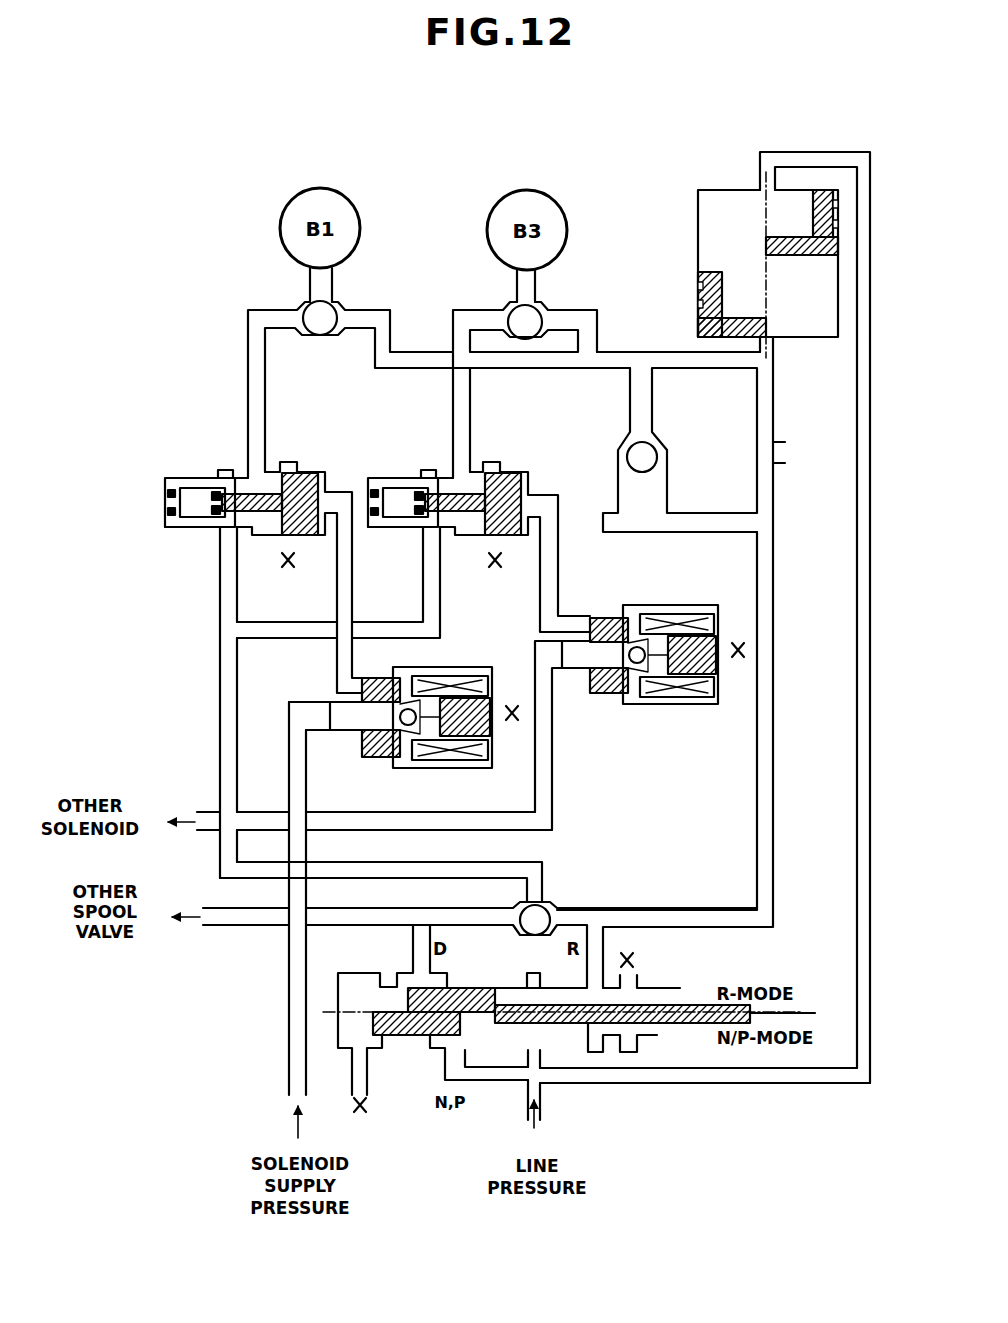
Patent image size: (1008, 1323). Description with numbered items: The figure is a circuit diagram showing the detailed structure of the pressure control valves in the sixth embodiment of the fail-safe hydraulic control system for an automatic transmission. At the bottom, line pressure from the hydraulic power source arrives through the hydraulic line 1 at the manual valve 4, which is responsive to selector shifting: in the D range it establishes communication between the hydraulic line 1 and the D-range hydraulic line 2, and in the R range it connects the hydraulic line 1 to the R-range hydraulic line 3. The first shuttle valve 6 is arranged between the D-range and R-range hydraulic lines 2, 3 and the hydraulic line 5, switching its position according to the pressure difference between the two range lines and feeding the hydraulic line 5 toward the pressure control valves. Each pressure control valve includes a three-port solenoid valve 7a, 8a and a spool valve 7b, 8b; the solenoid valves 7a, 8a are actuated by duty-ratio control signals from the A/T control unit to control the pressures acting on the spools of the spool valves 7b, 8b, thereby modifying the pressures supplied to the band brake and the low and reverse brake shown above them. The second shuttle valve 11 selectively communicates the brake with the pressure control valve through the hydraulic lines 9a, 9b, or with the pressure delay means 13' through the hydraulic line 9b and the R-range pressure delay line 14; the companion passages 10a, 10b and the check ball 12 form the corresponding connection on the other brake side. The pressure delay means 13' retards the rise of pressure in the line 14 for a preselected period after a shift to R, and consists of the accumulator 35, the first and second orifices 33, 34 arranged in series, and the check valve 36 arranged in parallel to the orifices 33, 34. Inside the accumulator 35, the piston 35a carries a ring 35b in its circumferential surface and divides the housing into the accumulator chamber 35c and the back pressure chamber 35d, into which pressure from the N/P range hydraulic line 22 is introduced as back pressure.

The hydraulic line 1 is at (555, 1095).
The D-range hydraulic line 2 is at (413, 950).
The R-range hydraulic line 3 is at (605, 950).
The manual valve 4 is at (657, 986).
The hydraulic line 5 is at (465, 866).
The first shuttle valve 6 is at (560, 905).
The three-port solenoid valve 7a is at (455, 668).
The spool valve 7b is at (305, 474).
The three-port solenoid valve 8a is at (665, 605).
The spool valve 8b is at (505, 476).
The hydraulic line 9a is at (248, 374).
The hydraulic line 9b is at (310, 288).
The passage 10a is at (453, 405).
The passage 10b is at (516, 290).
The second shuttle valve 11 is at (320, 327).
The ball check valve 12 is at (533, 315).
The pressure delay means 13' is at (705, 617).
The R-range pressure delay line 14 is at (622, 352).
The N/P range hydraulic line 22 is at (650, 1083).
The first orifice 33 is at (757, 463).
The second orifice 34 is at (755, 444).
The accumulator 35 is at (696, 214).
The piston 35a is at (710, 275).
The ring 35b is at (702, 318).
The accumulator chamber 35c is at (818, 316).
The back pressure chamber 35d is at (790, 212).
The check valve 36 is at (662, 450).